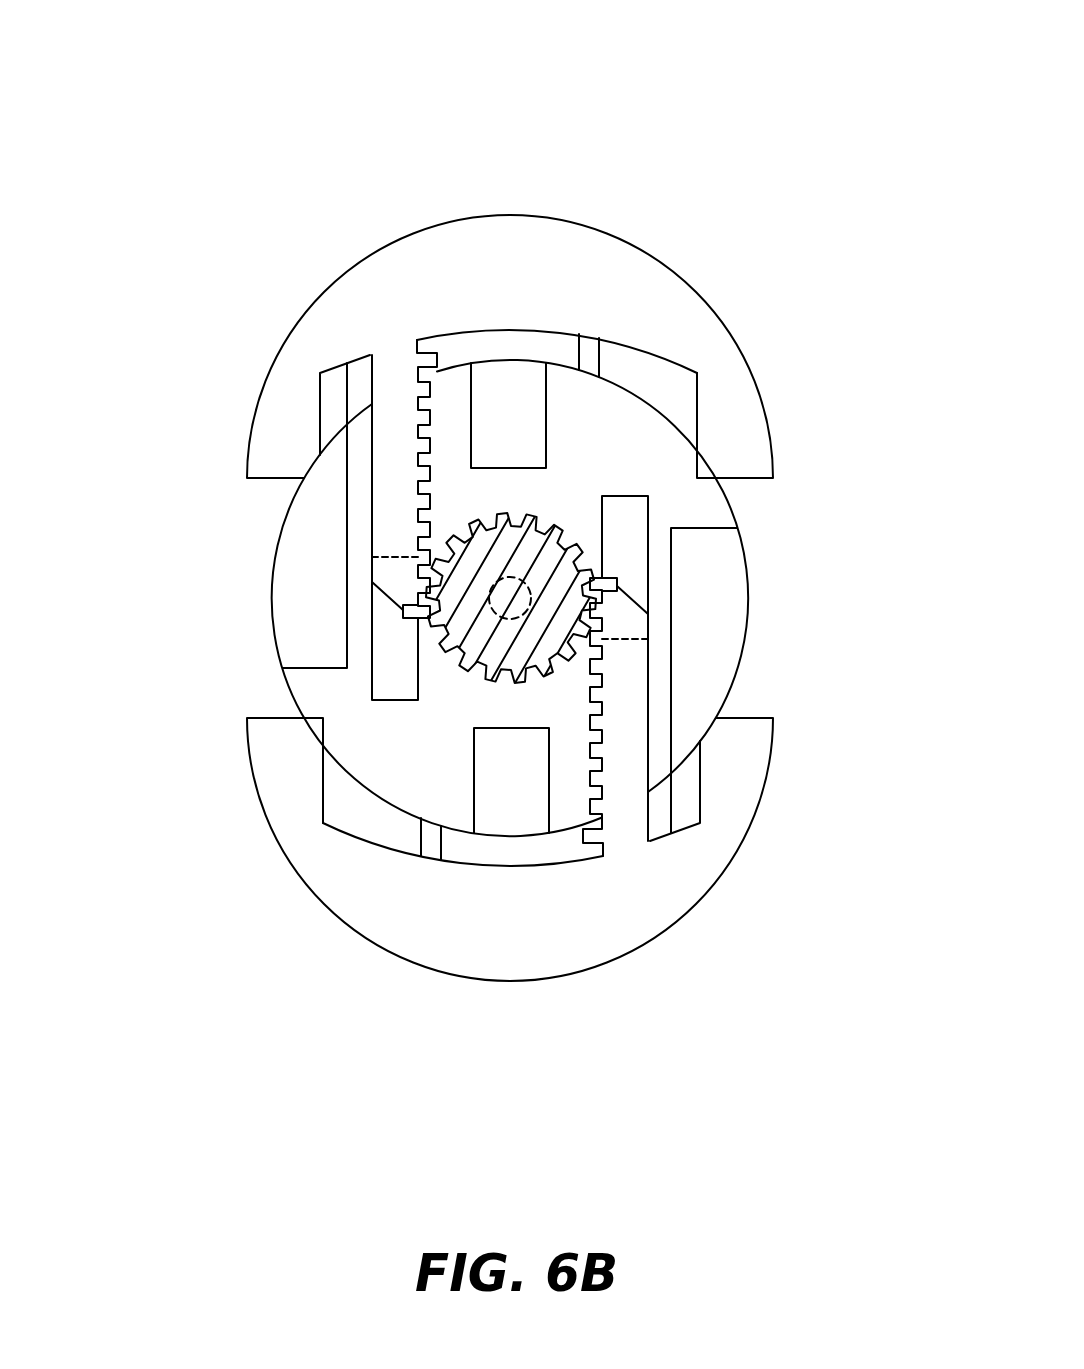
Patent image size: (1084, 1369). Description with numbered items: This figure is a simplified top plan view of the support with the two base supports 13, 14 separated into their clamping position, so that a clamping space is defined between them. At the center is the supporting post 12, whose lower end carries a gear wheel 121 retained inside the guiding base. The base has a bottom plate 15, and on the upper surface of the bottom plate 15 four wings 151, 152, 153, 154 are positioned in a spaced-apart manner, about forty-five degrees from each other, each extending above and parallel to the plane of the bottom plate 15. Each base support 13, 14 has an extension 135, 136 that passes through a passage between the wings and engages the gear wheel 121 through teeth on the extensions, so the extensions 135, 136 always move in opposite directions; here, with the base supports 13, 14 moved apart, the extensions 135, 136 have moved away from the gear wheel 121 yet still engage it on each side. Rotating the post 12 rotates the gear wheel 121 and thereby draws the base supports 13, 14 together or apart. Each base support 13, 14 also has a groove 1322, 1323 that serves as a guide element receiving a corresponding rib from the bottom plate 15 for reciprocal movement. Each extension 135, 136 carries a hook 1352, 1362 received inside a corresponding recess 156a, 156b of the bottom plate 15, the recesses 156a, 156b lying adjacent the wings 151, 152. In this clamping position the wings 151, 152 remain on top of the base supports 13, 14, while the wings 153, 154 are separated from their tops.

The supporting post 12 is at (468, 528).
The gear wheel 121 is at (467, 528).
The base support 13 is at (622, 268).
The groove 1322 is at (592, 353).
The groove 1323 is at (432, 840).
The extension 135 is at (393, 513).
The hook 1352 is at (403, 608).
The extension 136 is at (627, 717).
The hook 1362 is at (610, 583).
The base support 14 is at (365, 895).
The bottom plate 15 is at (292, 693).
The wing 151 is at (305, 508).
The wing 152 is at (713, 615).
The wing 153 is at (508, 813).
The wing 154 is at (508, 383).
The recess 156a is at (387, 633).
The recess 156b is at (637, 522).